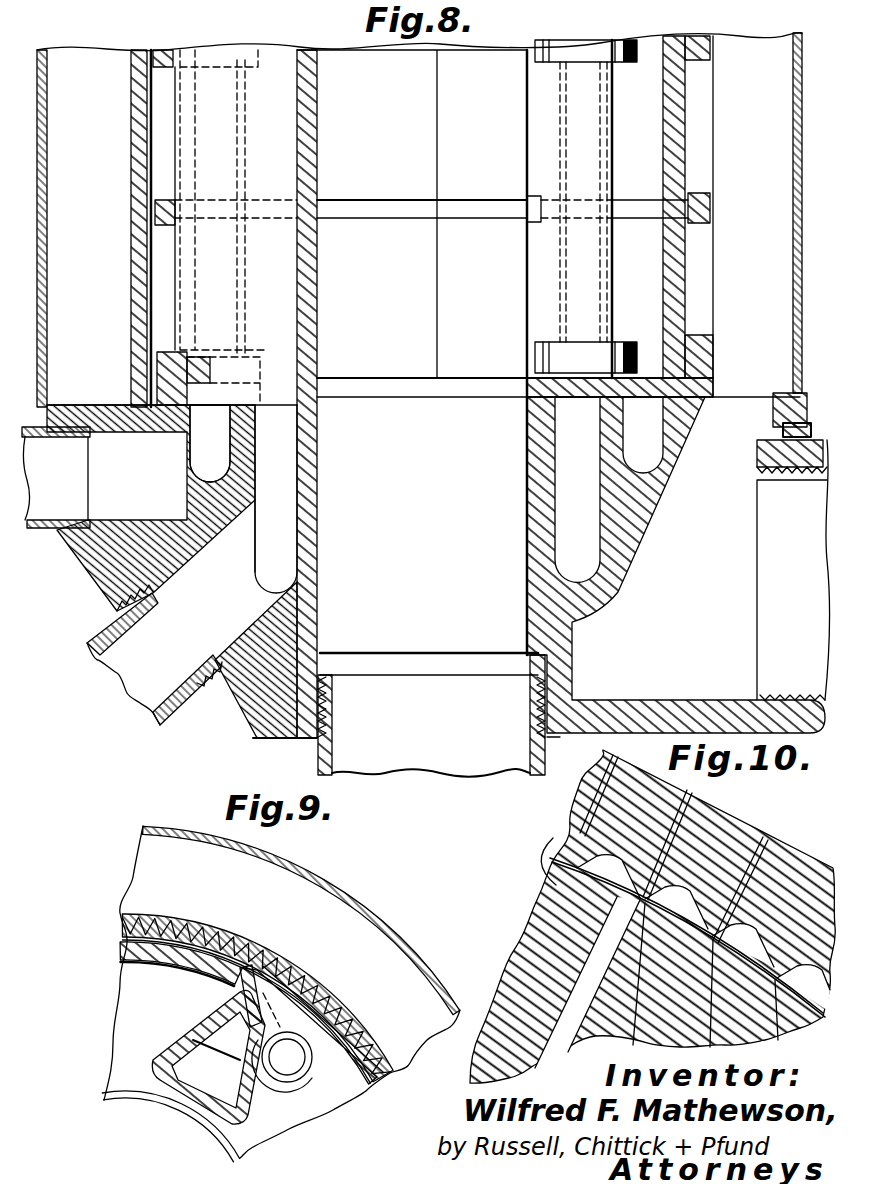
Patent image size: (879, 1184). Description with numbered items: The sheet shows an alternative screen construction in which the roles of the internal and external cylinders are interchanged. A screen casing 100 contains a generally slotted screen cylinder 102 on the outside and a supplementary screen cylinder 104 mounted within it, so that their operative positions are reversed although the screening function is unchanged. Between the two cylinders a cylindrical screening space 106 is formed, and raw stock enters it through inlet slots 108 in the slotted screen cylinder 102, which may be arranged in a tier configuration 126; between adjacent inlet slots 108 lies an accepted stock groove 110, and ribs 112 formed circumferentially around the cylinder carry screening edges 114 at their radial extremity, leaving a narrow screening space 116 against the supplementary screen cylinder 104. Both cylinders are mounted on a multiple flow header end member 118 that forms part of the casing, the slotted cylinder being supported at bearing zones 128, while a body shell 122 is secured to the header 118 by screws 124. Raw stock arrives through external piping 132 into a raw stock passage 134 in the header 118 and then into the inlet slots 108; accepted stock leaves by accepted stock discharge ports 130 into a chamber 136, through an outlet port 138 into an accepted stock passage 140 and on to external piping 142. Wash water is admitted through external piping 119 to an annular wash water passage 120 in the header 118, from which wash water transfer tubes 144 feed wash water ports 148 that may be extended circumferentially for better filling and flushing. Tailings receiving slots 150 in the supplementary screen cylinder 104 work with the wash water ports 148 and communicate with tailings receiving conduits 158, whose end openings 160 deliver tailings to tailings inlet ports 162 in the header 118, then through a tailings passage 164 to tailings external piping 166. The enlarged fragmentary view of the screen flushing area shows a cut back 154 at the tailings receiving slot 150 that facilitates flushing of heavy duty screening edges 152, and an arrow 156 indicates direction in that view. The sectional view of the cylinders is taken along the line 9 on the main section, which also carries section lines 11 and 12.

In FIG. 8, the screen casing 100 is at (46, 50).
In FIG. 8, the generally slotted screen cylinder 102 is at (142, 50).
In FIG. 9, the generally slotted screen cylinder 102 is at (235, 935).
In FIG. 8, the supplementary screen cylinder 104 is at (172, 50).
In FIG. 9, the supplementary screen cylinder 104 is at (251, 1013).
In FIG. 10, the cylindrical screening space 106 is at (570, 860).
In FIG. 8, the inlet slots 108 is at (699, 83).
In FIG. 9, the inlet slots 108 is at (196, 915).
In FIG. 10, the inlet slots 108 is at (767, 833).
In FIG. 10, the accepted stock groove 110 is at (837, 1047).
In FIG. 10, the ribs 112 is at (548, 841).
In FIG. 10, the screening edges 114 is at (557, 865).
In FIG. 10, the narrow screening space 116 is at (573, 882).
In FIG. 8, the multiple flow header end member 118 is at (230, 718).
In FIG. 8, the external piping 119 is at (48, 498).
In FIG. 8, the annular wash water passage 120 is at (224, 452).
In FIG. 8, the body shell 122 is at (50, 338).
In FIG. 9, the body shell 122 is at (333, 887).
In FIG. 8, the screws 124 is at (781, 414).
In FIG. 8, the tier configuration 126 is at (722, 180).
In FIG. 8, the bearing zones 128 is at (717, 362).
In FIG. 8, the accepted stock discharge ports 130 is at (647, 218).
In FIG. 8, the external piping 132 is at (808, 597).
In FIG. 8, the raw stock passage 134 is at (722, 501).
In FIG. 8, the chamber 136 is at (655, 287).
In FIG. 8, the outlet port 138 is at (220, 400).
In FIG. 8, the accepted stock passage 140 is at (495, 430).
In FIG. 8, the external piping 142 is at (445, 728).
In FIG. 9, the wash water transfer tubes 144 is at (290, 1072).
In FIG. 8, the wash water ports 148 is at (167, 377).
In FIG. 8, the tailings receiving slots 150 is at (165, 245).
In FIG. 9, the tailings receiving slots 150 is at (233, 987).
In FIG. 10, the tailings receiving slots 150 is at (603, 950).
In FIG. 10, the heavy duty screening edges 152 is at (736, 1003).
In FIG. 10, the cut back 154 is at (584, 1032).
In FIG. 10, the direction of rotation 156 is at (767, 813).
In FIG. 8, the tailings receiving conduits 158 is at (285, 156).
In FIG. 9, the tailings receiving conduits 158 is at (220, 1079).
In FIG. 8, the end openings 160 is at (298, 385).
In FIG. 8, the tailings inlet ports 162 is at (298, 428).
In FIG. 8, the tailings passage 164 is at (296, 562).
In FIG. 8, the tailings external piping 166 is at (119, 628).
In FIG. 8, the section line 9— 9 is at (765, 125).
In FIG. 8, the section line 11- 11 is at (770, 207).
In FIG. 8, the section line 12- 12 is at (343, 55).